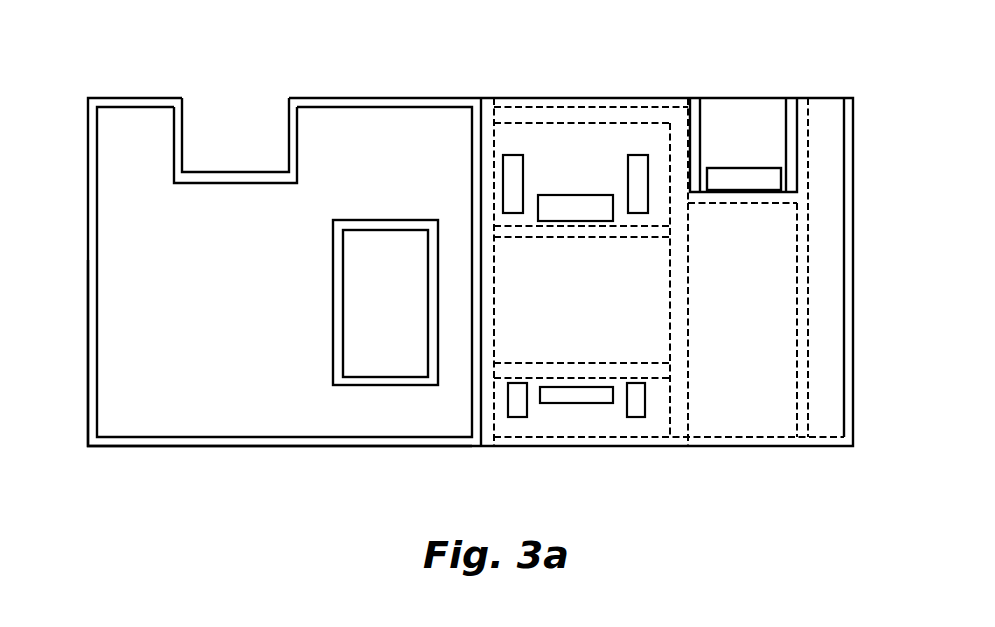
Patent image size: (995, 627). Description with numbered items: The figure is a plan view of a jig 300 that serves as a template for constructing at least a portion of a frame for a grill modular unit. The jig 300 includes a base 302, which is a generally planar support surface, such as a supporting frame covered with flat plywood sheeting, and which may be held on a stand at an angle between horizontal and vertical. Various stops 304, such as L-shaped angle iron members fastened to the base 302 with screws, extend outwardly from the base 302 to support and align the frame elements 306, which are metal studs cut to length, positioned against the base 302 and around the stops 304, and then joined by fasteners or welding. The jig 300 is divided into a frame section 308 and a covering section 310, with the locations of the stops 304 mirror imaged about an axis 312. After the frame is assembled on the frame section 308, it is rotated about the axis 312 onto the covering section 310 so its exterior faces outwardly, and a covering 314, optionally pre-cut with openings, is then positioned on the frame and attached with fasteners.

The jig 300 is at (528, 73).
The base 302 is at (247, 108).
The stops 304 is at (383, 385).
The frame elements 306 is at (690, 408).
The frame section 308 is at (859, 383).
The covering section 310 is at (141, 242).
The axis 312 is at (481, 128).
The covering 314 is at (127, 317).